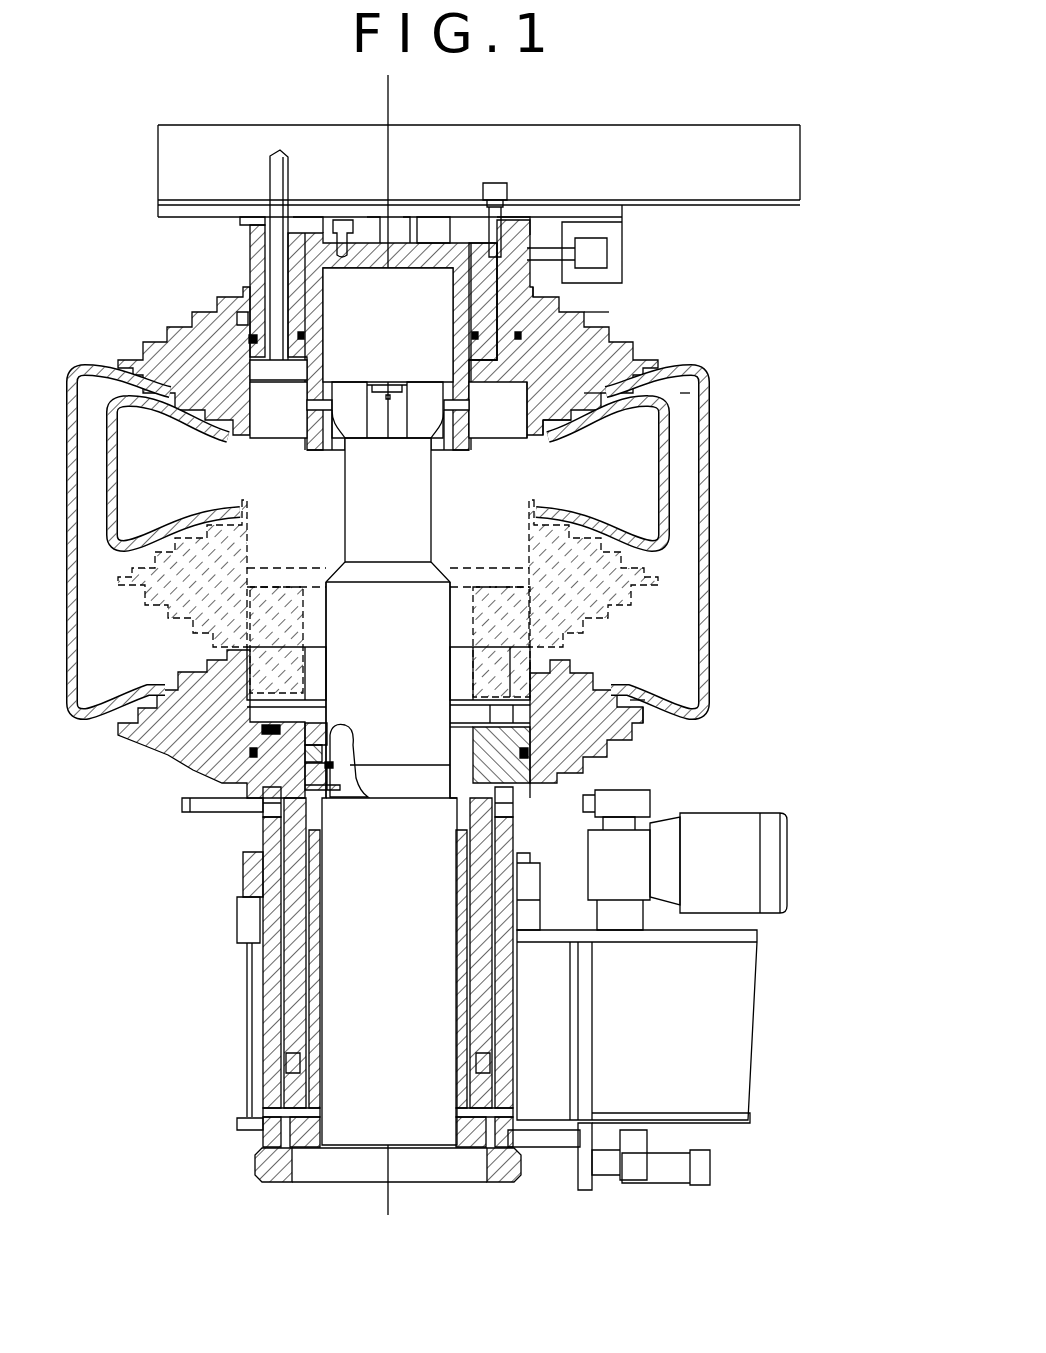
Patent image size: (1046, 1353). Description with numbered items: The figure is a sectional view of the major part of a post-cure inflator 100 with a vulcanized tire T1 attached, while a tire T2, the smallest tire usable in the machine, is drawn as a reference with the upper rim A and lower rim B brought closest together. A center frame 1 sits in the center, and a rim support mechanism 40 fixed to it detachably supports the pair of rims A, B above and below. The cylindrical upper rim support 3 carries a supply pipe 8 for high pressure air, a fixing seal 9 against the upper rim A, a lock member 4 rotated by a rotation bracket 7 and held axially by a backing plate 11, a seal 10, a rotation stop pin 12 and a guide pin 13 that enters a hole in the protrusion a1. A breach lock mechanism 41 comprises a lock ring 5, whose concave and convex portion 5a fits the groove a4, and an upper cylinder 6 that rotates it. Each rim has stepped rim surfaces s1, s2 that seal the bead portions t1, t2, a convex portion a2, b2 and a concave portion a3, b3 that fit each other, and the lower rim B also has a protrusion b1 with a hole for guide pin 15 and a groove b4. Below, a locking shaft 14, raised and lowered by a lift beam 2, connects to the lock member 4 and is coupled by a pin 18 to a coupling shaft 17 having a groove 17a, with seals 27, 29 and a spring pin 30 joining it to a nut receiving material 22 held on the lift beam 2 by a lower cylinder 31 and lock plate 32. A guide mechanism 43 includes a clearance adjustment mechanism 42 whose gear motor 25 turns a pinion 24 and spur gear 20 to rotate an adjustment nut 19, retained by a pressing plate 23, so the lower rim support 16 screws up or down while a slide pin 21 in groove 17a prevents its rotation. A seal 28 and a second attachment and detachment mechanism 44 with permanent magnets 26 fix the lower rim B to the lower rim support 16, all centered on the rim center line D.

The center frame 1 is at (775, 183).
The lift beam 2 is at (723, 1100).
The upper rim support 3 is at (466, 255).
The lock member 4 is at (432, 250).
The lock ring 5 is at (518, 216).
The concave and convex portion 5a is at (500, 322).
The upper cylinder 6 is at (623, 252).
The rotation bracket 7 is at (327, 236).
The supply pipe 8 is at (266, 172).
The fixing seal 9 is at (237, 335).
The seal 10 is at (297, 337).
The backing plate 11 is at (378, 225).
The rotation stop pin 12 is at (310, 402).
The guide pin 13 is at (495, 385).
The locking shaft 14 is at (332, 600).
The guide pin 15 is at (510, 700).
The lower rim support 16 is at (262, 782).
The coupling shaft 17 is at (297, 1003).
The groove 17a is at (307, 1035).
The pin 18 is at (313, 820).
The adjustment nut 19 is at (260, 836).
The spur gear 20 is at (182, 808).
The slide pin 21 is at (287, 1063).
The nut receiving material 22 is at (270, 963).
The pressing plate 23 is at (532, 850).
The pinion 24 is at (645, 806).
The gear motor 25 is at (753, 907).
The permanent magnets 26 is at (215, 750).
The seal 27 is at (350, 762).
The seal 28 is at (248, 763).
The seal 29 is at (333, 730).
The spring pin 30 is at (297, 1117).
The lower cylinder 31 is at (657, 1167).
The lock plate 32 is at (540, 1138).
The rim support mechanism 40 is at (449, 551).
The breach lock mechanism 41 is at (633, 218).
The clearance adjustment mechanism 42 is at (711, 850).
The guide mechanism 43 is at (759, 868).
The second attachment and detachment mechanism 44 is at (665, 733).
The post-cure inflator 100 is at (636, 113).
The upper rim A is at (663, 355).
The lower rim B is at (640, 593).
The rim center line D is at (401, 507).
The tire T1 is at (724, 575).
The tire T2 is at (677, 460).
The protrusion a1 is at (520, 395).
The convex portion a2 is at (531, 300).
The concave portion a3 is at (548, 440).
The groove a4 is at (556, 333).
The protrusion b1 is at (527, 727).
The convex portion b2 is at (543, 643).
The concave portion b3 is at (532, 792).
The groove b4 is at (540, 665).
The rim surface s1 is at (587, 418).
The rim surface s2 is at (594, 320).
The bead portion t1 is at (682, 393).
The bead portion t2 is at (637, 693).